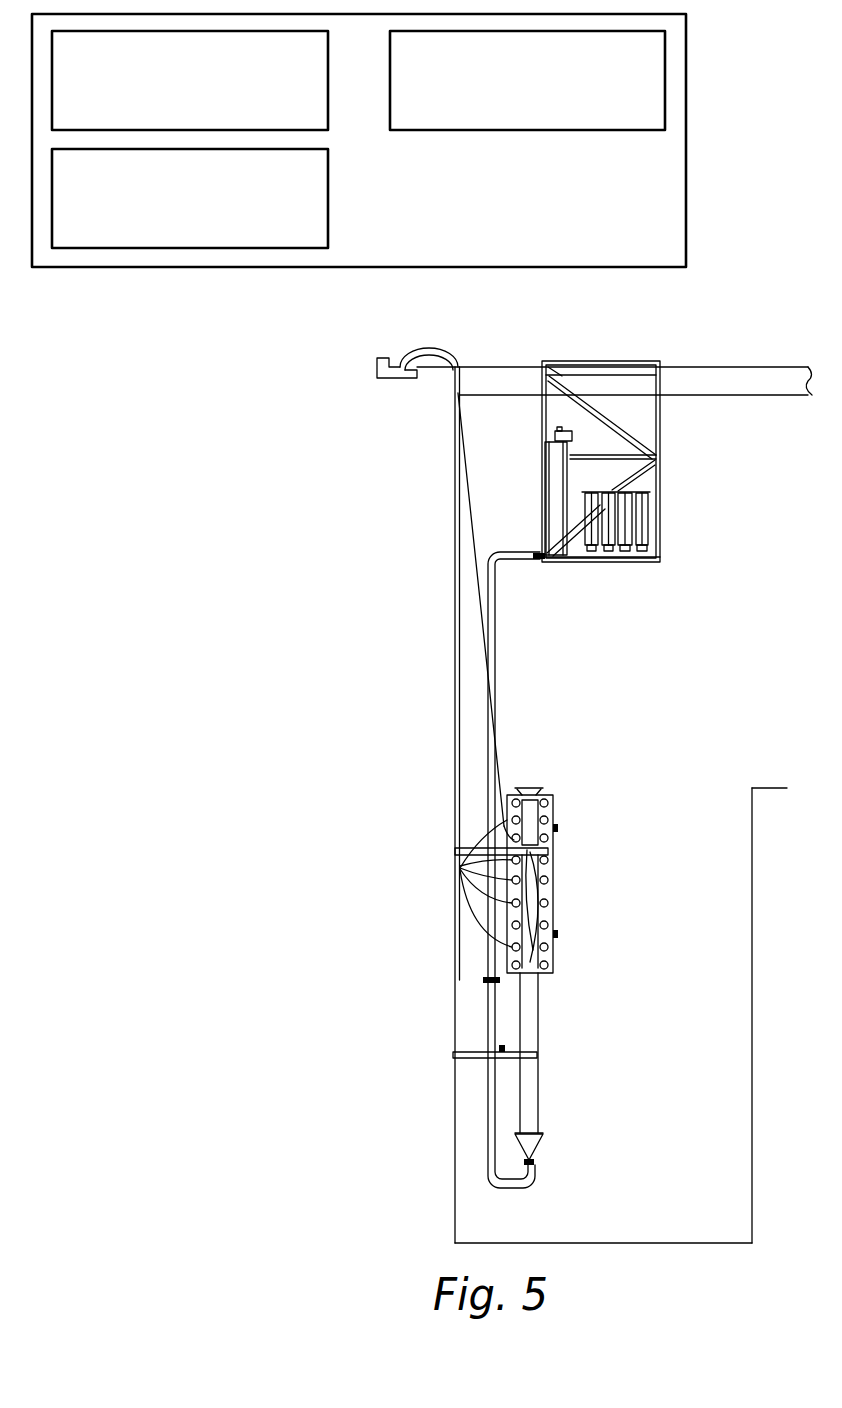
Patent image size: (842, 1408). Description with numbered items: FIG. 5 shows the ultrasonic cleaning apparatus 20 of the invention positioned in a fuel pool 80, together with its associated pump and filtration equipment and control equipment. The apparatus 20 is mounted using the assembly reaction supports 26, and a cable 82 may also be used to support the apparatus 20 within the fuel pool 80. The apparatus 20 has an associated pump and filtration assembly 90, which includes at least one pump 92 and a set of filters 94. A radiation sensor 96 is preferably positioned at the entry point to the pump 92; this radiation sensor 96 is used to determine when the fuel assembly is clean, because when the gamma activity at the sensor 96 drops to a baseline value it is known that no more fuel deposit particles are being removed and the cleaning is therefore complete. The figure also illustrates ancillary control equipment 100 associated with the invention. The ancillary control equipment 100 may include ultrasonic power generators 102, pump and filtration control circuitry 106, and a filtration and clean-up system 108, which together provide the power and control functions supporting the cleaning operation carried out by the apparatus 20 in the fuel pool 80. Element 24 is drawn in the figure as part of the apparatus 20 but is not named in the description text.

The ancillary control equipment 100 is at (687, 58).
The ultrasonic power generators 102 is at (614, 131).
The pump and filtration control circuitry 106 is at (330, 72).
The filtration and clean-up system 108 is at (330, 192).
The fuel pool 80 is at (681, 1067).
The cable 82 is at (470, 465).
The pump and filtration assembly 90 is at (673, 563).
The pump 92 is at (548, 463).
The set of filters 94 is at (622, 491).
The radiation sensor 96 is at (536, 560).
The ultrasonic cleaning apparatus 20 is at (546, 976).
The transducer housing 24 is at (556, 920).
The assembly reaction supports 26 is at (472, 850).